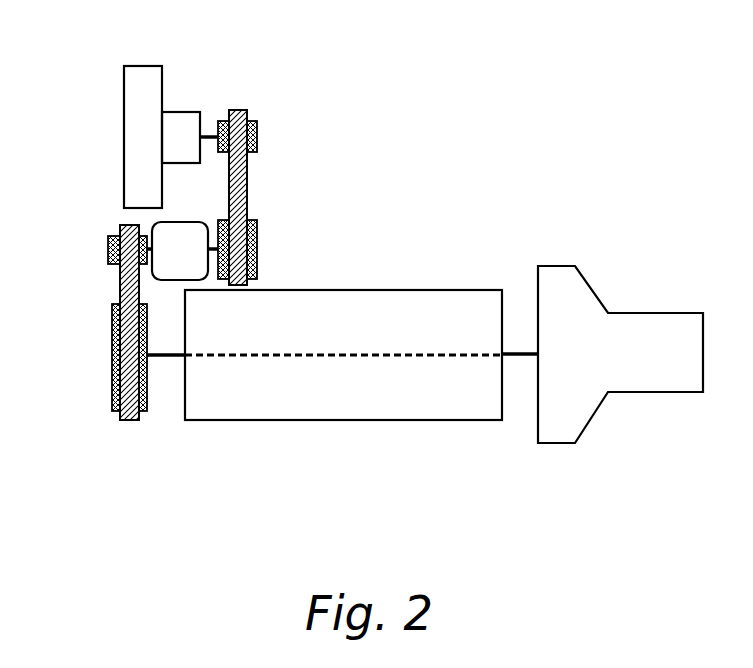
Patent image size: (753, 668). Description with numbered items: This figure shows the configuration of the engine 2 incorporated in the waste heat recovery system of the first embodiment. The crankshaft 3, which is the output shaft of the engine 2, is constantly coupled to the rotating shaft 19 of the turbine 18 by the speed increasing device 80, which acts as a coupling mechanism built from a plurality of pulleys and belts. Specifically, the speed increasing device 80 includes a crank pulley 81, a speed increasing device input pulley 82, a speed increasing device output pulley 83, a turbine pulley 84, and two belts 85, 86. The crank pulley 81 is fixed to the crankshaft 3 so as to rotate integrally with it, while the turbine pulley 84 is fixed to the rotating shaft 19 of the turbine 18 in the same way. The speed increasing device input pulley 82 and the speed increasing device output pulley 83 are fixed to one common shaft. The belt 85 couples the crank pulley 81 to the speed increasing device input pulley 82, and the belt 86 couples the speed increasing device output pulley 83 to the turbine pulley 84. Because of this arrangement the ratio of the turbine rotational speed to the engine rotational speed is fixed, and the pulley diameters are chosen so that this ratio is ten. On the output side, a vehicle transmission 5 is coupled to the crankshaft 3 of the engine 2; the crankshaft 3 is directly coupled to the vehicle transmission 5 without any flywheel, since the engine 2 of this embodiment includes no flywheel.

The engine 2 is at (393, 290).
The crankshaft 3 is at (171, 373).
The vehicle transmission 5 is at (555, 266).
The turbine 18 is at (124, 85).
The rotating shaft 19 is at (211, 132).
The speed increasing device 80 is at (153, 226).
The crank pulley 81 is at (112, 355).
The speed increasing device input pulley 82 is at (108, 253).
The speed increasing device output pulley 83 is at (258, 246).
The turbine pulley 84 is at (258, 134).
The belt 85 is at (132, 421).
The belt 86 is at (248, 186).